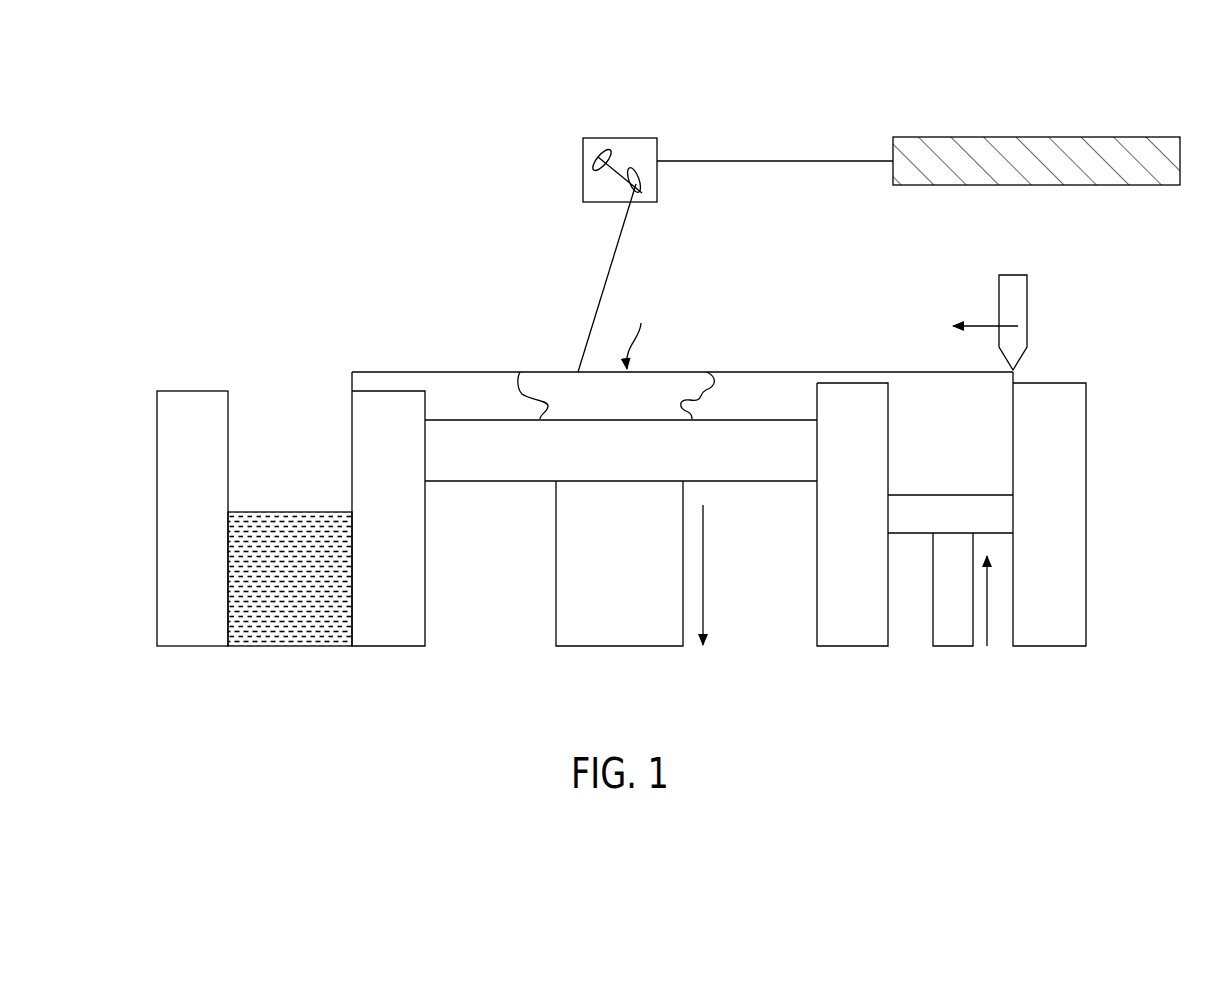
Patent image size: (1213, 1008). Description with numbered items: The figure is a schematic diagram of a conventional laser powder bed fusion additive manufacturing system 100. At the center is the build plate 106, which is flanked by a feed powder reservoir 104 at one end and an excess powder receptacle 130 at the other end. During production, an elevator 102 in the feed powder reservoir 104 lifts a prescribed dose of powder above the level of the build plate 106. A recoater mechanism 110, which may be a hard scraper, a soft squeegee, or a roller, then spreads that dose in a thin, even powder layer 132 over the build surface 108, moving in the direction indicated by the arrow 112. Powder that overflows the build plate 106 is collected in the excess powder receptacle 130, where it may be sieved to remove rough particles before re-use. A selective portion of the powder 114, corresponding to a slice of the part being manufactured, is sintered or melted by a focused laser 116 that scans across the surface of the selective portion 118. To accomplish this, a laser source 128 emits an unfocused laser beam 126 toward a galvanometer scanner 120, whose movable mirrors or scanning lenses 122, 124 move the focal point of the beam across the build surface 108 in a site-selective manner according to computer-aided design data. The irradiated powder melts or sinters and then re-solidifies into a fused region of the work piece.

The laser powder bed fusion system 100 is at (468, 103).
The elevator 102 is at (921, 523).
The feed powder reservoir 104 is at (953, 668).
The build plate 106 is at (760, 472).
The build surface 108 is at (482, 417).
The recoater mechanism 110 is at (1017, 307).
The arrow 112 is at (982, 323).
The selective portion of the powder 114 is at (678, 384).
The focused laser 116 is at (618, 250).
The surface of the selective portion 118 is at (640, 333).
The galvanometer scanner 120 is at (632, 149).
The movable mirror or scanning lens 122 is at (595, 160).
The movable mirror or scanning lens 124 is at (644, 184).
The unfocused laser beam 126 is at (780, 160).
The laser source 128 is at (967, 139).
The excess powder receptacle 130 is at (287, 668).
The powder layer 132 is at (772, 383).